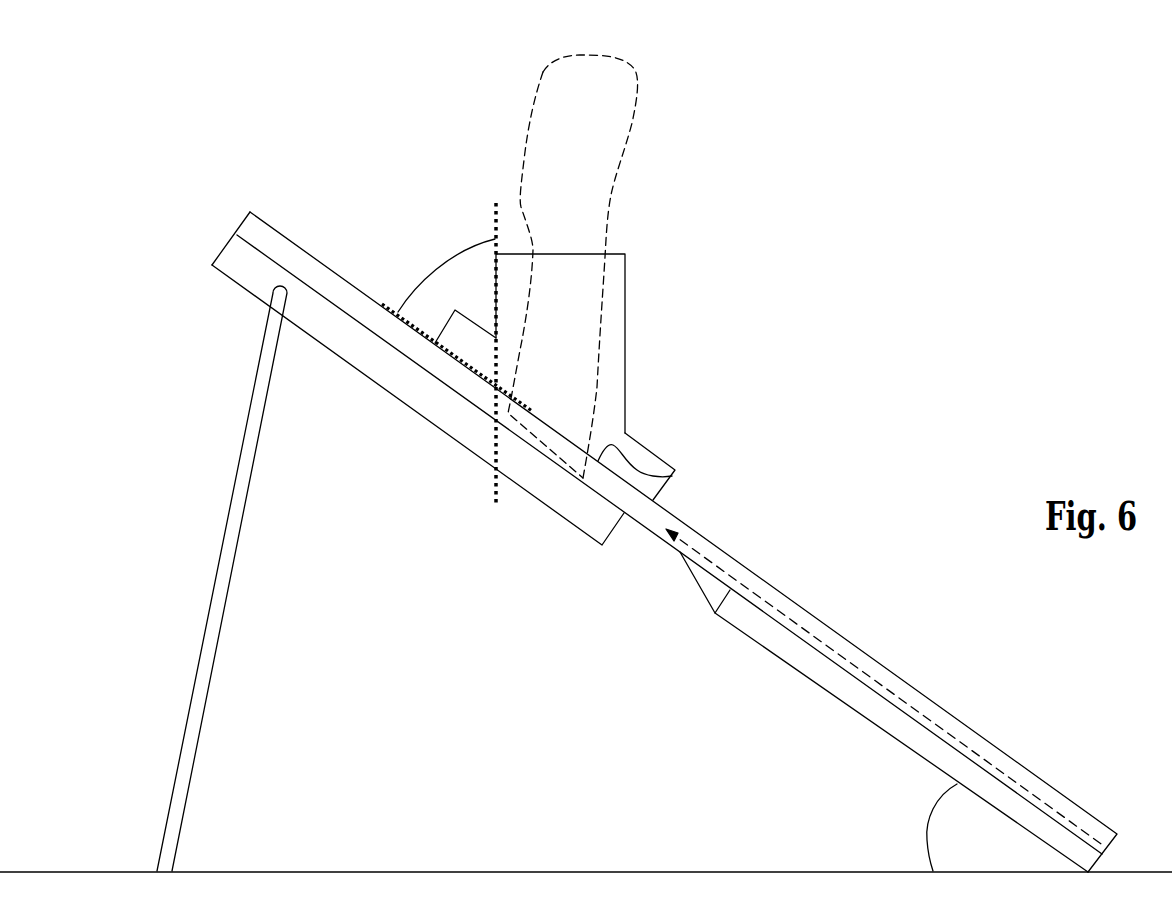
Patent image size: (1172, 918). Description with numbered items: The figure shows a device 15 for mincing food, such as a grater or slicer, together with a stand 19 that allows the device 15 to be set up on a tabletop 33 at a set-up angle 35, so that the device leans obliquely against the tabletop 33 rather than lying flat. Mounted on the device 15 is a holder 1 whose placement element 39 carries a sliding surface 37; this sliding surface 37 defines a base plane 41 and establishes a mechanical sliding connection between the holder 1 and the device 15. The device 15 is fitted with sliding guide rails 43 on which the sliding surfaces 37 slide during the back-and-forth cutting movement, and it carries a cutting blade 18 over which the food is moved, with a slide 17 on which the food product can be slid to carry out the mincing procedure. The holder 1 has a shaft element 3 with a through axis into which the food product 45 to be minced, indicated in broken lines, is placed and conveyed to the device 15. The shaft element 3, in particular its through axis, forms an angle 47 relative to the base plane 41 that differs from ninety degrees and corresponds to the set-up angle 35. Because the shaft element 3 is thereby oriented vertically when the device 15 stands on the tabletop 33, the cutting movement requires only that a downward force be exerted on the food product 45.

The food holder 1 is at (776, 326).
The shaft element 3 is at (620, 289).
The device for mincing food 15 is at (390, 514).
The slide 17 is at (345, 312).
The cutting blade 18 is at (690, 548).
The stand 19 is at (225, 555).
The tabletop 33 is at (387, 871).
The set-up angle 35 is at (958, 840).
The sliding surface 37 is at (673, 477).
The placement element 39 is at (645, 460).
The base plane 41 is at (410, 328).
The sliding guide rails 43 is at (258, 233).
The food product 45 is at (595, 146).
The angle 47 is at (442, 281).